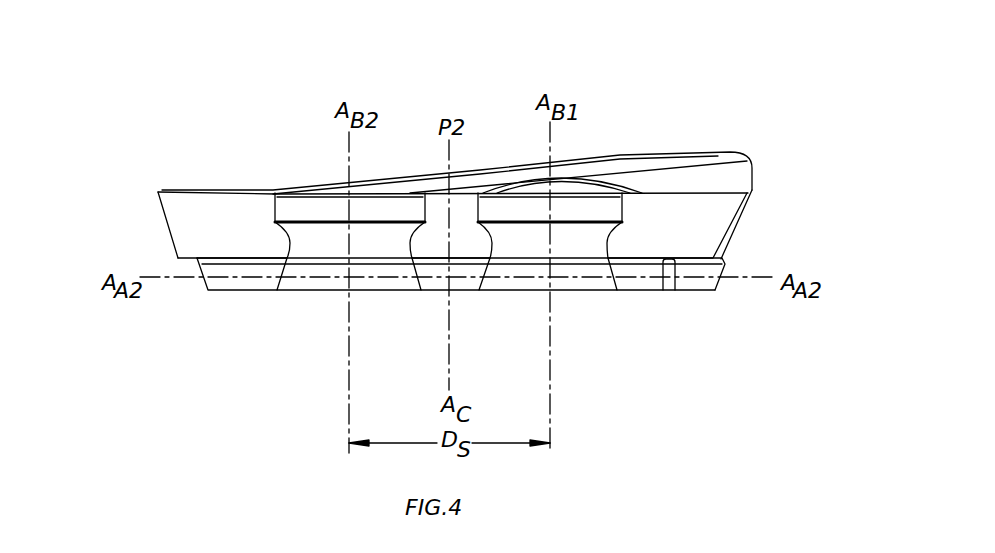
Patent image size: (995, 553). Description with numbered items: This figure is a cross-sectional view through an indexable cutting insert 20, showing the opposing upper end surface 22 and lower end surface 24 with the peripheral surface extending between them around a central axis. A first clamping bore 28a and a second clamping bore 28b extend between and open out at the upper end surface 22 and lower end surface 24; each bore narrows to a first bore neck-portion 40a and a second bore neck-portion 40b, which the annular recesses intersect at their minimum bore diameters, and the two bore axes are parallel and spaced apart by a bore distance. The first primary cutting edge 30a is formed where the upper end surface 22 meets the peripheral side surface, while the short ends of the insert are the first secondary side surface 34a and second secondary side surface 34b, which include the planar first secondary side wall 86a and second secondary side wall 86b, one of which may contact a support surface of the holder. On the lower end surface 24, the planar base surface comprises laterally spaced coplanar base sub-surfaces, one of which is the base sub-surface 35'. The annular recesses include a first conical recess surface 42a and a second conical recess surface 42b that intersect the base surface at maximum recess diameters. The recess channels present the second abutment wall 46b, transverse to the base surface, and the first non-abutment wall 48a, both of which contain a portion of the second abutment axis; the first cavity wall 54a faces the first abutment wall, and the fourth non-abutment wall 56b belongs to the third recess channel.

The indexable cutting insert 20 is at (186, 172).
The upper end surface 22 is at (634, 152).
The lower end surface 24 is at (714, 303).
The first clamping bore 28a is at (527, 219).
The second clamping bore 28b is at (311, 218).
The first primary cutting edge 30a is at (706, 160).
The first secondary side surface 34a is at (756, 226).
The second secondary side surface 34b is at (150, 227).
The base sub-surface 35' is at (433, 328).
The first bore neck-portion 40a is at (601, 190).
The second bore neck-portion 40b is at (407, 241).
The first conical recess surface 42a is at (520, 283).
The second conical recess surface 42b is at (332, 283).
The second abutment wall 46b is at (243, 283).
The first non-abutment wall 48a is at (694, 283).
The first cavity wall 54a is at (607, 283).
The fourth non-abutment wall 56b is at (462, 288).
The first secondary side wall 86a is at (734, 236).
The second secondary side wall 86b is at (171, 236).